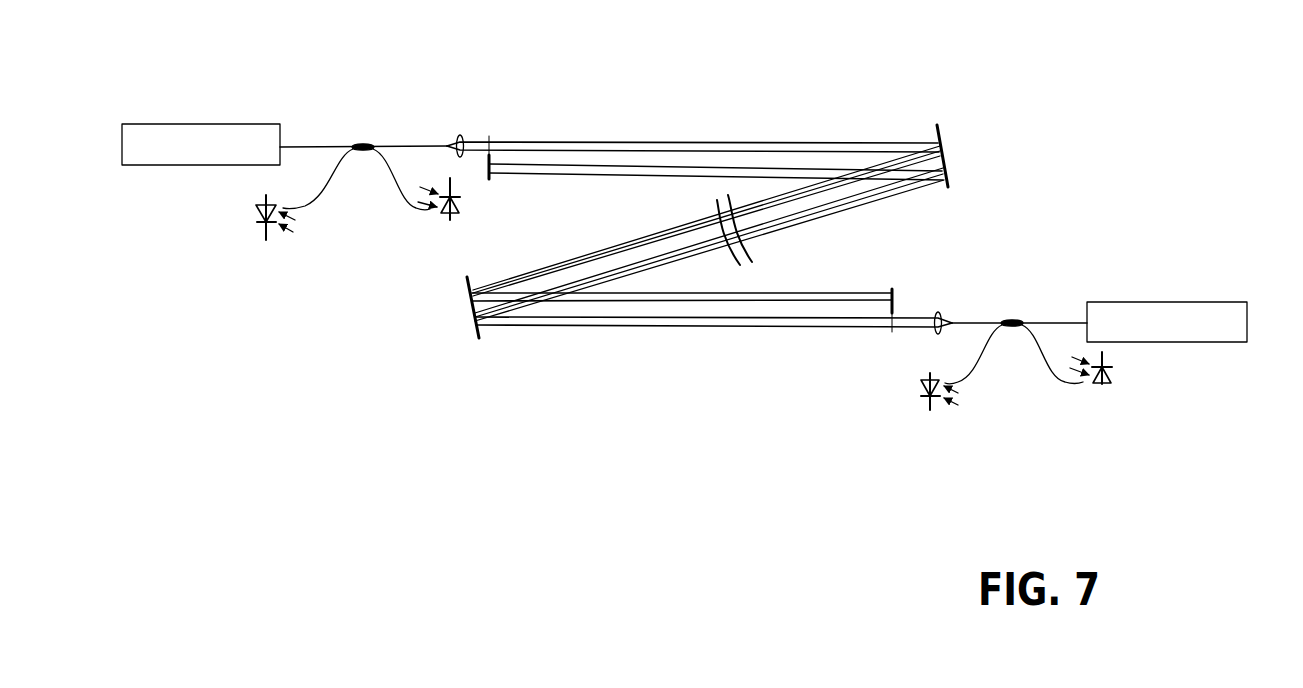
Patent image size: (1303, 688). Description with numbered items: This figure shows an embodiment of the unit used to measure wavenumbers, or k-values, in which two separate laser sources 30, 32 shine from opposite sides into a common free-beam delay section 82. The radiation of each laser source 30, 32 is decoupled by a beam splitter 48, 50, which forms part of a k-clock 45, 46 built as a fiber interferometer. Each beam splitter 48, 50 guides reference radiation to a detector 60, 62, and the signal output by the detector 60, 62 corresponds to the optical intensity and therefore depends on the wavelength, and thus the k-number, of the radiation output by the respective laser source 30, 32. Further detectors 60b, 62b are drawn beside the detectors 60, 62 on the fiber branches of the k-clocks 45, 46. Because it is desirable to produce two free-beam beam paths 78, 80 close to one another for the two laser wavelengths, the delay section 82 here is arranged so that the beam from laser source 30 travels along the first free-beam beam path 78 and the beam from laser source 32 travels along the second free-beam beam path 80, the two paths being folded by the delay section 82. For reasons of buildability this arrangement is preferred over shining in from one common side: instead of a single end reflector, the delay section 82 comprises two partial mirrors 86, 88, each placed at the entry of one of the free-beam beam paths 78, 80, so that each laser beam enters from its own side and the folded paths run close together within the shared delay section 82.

The laser source 30 is at (154, 133).
The laser source 32 is at (1223, 332).
The k-clock 45 is at (358, 206).
The k-clock 46 is at (1007, 424).
The beam splitter 48 is at (360, 146).
The beam splitter 50 is at (1010, 322).
The detector 60 is at (262, 227).
The first auxiliary photodetector 60b is at (452, 214).
The detector 62 is at (1105, 385).
The second auxiliary photodetector 62b is at (928, 402).
The free-beam beam path 78 is at (587, 142).
The free-beam beam path 80 is at (730, 327).
The free-beam delay section 82 is at (840, 228).
The partial mirror 86 is at (895, 306).
The partial mirror 88 is at (485, 155).